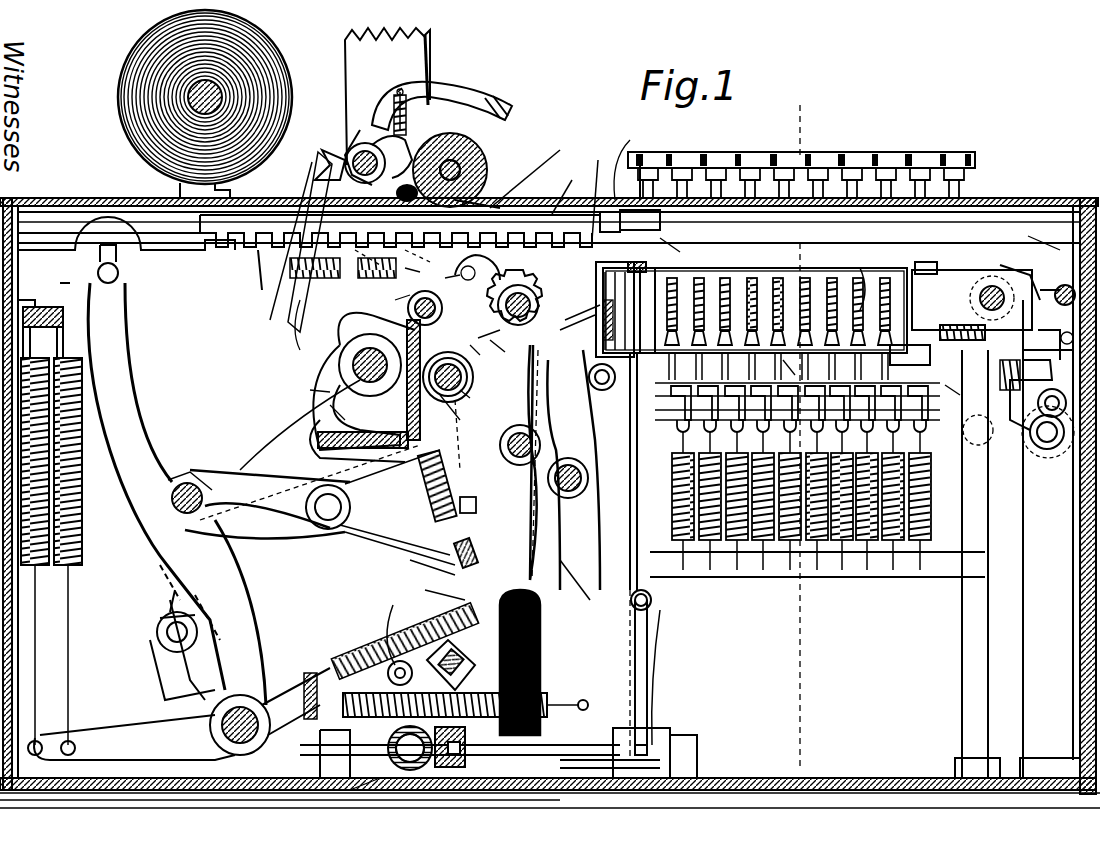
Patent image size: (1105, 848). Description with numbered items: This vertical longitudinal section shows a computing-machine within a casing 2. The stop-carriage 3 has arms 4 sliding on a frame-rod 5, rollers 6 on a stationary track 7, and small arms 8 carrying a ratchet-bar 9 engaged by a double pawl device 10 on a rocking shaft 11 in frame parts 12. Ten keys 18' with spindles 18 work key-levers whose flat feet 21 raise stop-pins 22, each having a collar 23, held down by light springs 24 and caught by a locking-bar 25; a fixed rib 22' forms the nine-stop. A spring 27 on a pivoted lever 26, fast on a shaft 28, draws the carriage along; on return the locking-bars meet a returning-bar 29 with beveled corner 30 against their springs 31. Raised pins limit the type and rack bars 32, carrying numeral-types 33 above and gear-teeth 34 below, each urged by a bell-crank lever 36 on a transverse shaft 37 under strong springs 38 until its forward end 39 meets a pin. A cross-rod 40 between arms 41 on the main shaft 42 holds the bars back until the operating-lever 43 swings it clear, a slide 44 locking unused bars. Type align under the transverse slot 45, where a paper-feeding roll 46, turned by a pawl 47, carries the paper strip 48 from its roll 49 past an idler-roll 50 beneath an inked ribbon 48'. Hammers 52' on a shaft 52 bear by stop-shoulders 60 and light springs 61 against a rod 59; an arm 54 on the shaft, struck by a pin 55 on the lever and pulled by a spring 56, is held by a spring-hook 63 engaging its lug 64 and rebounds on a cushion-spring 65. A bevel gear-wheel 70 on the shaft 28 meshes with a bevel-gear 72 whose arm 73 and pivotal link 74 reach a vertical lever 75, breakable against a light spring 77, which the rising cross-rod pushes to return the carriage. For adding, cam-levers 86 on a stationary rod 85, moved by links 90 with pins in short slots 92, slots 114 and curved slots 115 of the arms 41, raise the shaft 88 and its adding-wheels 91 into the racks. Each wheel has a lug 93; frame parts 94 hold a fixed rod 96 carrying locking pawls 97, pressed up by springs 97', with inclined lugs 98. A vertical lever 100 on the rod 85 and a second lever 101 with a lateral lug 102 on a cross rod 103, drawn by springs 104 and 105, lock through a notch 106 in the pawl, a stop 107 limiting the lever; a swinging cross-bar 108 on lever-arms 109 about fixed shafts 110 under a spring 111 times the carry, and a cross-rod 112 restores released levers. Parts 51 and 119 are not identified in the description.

The casing 2 is at (1076, 200).
The stop-carriage 3 is at (726, 299).
The arms 4 is at (972, 305).
The frame-rod 5 is at (899, 452).
The rollers 6 is at (609, 300).
The stationary track 7 is at (575, 808).
The small arms 8 is at (1035, 280).
The toothed ratchet-bar 9 is at (1065, 305).
The double pawl device 10 is at (1050, 372).
The rocking shaft 11 is at (1040, 440).
The frame parts 12 is at (1012, 556).
The spindles 18 is at (815, 184).
The keys 18' is at (810, 143).
The broad flat foot 21 is at (799, 393).
The stop-pins 22 is at (778, 317).
The fixed rib 22' is at (946, 260).
The shoulder or collar 23 is at (928, 308).
The light springs 24 is at (862, 277).
The locking-bar 25 is at (910, 364).
The pivoted lever 26 is at (648, 605).
The spring 27 is at (650, 615).
The shaft 28 is at (590, 745).
The stationary returning-bar 29 is at (954, 384).
The beveled end or corner 30 is at (309, 232).
The springs 31 is at (1025, 365).
The combination type and rack bars 32 is at (590, 227).
The numeral-types 33 is at (480, 208).
The gear-teeth 34 is at (262, 268).
The bell-crank lever 36 is at (120, 400).
The transverse shaft 37 is at (300, 670).
The strong springs 38 is at (82, 585).
The forward ends 39 is at (632, 210).
The cross-rod 40 is at (192, 490).
The arms 41 is at (288, 442).
The main shaft 42 is at (338, 360).
The operating-lever 43 is at (350, 78).
The transversely-movable slide 44 is at (672, 246).
The transverse slot 45 is at (520, 198).
The paper-feeding roll 46 is at (487, 155).
The pawl 47 is at (420, 135).
The paper strip 48 is at (321, 104).
The inked ribbon 48' is at (624, 160).
The roll 49 is at (200, 97).
The idler-roll 50 is at (392, 243).
The arm 51 is at (560, 210).
The shaft 52 is at (321, 143).
The hammers 52' is at (442, 94).
The arm 54 is at (453, 264).
The pin or lug 55 is at (441, 277).
The spring 56 is at (306, 325).
The rod 59 is at (402, 110).
The stop-shoulders 60 is at (360, 130).
The light springs 61 is at (400, 92).
The spring-hook 63 is at (345, 170).
The lug 64 is at (285, 280).
The cushion-spring 65 is at (408, 271).
The bevel gear-wheel 70 is at (450, 747).
The bevel-gear 72 is at (460, 554).
The arm 73 is at (359, 798).
The pivotal link 74 is at (310, 672).
The vertical lever 75 is at (160, 665).
The light spring 77 is at (195, 600).
The stationary rod 85 is at (506, 445).
The cam-levers 86 is at (452, 614).
The shaft 88 is at (498, 292).
The links 90 is at (435, 308).
The adding-wheels 91 is at (640, 160).
The short slots 92 is at (399, 289).
The lug 93 is at (469, 347).
The movable frame parts 94 is at (463, 430).
The fixed rod 96 is at (447, 485).
The locking pawls 97 is at (468, 377).
The springs 97' is at (306, 390).
The inclined lugs 98 is at (492, 350).
The vertical lever 100 is at (517, 540).
The second vertical lever 101 is at (572, 567).
The lateral lug 102 is at (576, 326).
The cross rod 103 is at (588, 472).
The spring 104 is at (400, 621).
The spring 105 is at (385, 678).
The notch 106 is at (573, 470).
The stop 107 is at (605, 393).
The swinging cross-bar 108 is at (421, 578).
The lever-arms 109 is at (267, 504).
The fixed shafts 110 is at (328, 507).
The spring 111 is at (327, 505).
The cross-rod 112 is at (404, 636).
The slots 114 is at (365, 391).
The lower curved slots 115 is at (337, 408).
The pin 119 is at (1039, 234).